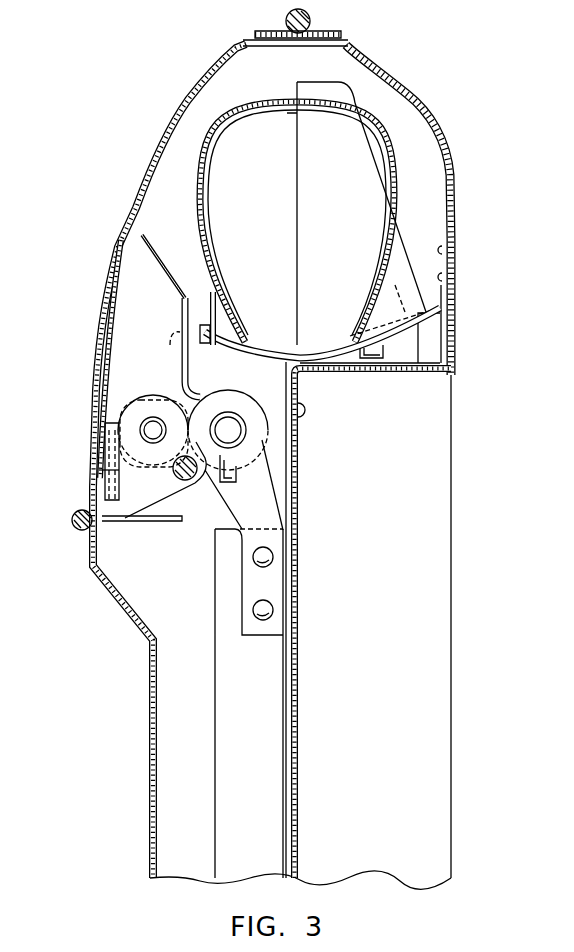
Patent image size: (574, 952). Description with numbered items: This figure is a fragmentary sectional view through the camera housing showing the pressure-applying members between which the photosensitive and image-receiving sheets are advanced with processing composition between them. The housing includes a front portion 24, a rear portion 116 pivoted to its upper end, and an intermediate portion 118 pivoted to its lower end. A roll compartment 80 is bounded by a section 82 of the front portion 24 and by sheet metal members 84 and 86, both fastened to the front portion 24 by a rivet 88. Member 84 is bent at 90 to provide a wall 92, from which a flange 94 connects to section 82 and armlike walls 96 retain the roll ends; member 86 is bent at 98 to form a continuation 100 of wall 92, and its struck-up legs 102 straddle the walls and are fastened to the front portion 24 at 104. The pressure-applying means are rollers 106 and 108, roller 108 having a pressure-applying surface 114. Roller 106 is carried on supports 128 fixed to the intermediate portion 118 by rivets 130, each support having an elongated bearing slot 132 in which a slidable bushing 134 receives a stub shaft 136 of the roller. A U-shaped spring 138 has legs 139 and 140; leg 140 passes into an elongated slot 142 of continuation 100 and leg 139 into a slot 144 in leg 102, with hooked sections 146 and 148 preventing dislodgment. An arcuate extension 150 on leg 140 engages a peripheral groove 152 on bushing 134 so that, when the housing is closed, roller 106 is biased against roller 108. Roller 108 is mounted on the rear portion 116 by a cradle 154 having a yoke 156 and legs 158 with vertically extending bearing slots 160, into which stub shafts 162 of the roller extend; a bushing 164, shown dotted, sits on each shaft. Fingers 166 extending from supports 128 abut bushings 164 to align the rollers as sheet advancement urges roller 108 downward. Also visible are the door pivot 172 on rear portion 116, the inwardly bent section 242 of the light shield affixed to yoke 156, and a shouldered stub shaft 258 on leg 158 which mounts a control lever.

The front portion 24 is at (452, 191).
The compartment 80 is at (267, 183).
The section 82 is at (455, 244).
The sheet metal member 84 is at (350, 365).
The sheet metal member 86 is at (283, 346).
The rivet 88 is at (305, 410).
The bend 90 is at (312, 372).
The wall 92 is at (396, 325).
The flange 94 is at (455, 274).
The armlike wall 96 is at (337, 149).
The bend 98 is at (288, 368).
The continuation 100 is at (228, 298).
The leg 102 is at (434, 372).
The fastening point 104 is at (450, 336).
The roller 106 is at (268, 472).
The roller 108 is at (144, 416).
The pressure-applying surface 114 is at (118, 418).
The rear portion 116 is at (104, 318).
The intermediate portion 118 is at (243, 655).
The support 128 is at (290, 462).
The rivet 130 is at (271, 560).
The bearing slot 132 is at (220, 498).
The bushing 134 is at (228, 482).
The stub shaft 136 is at (178, 300).
The spring 138 is at (262, 98).
The leg 139 is at (368, 240).
The leg 140 is at (214, 228).
The slot 142 is at (240, 330).
The slot 144 is at (350, 330).
The hooked section 146 is at (355, 296).
The hooked section 148 is at (202, 296).
The arcuate extension 150 is at (262, 434).
The peripheral groove 152 is at (170, 345).
The cradle 154 is at (100, 572).
The yoke 156 is at (95, 476).
The leg 158 is at (190, 490).
The bearing slot 160 is at (150, 416).
The stub shaft 162 is at (130, 420).
The bushing 164 is at (120, 437).
The finger 166 is at (112, 488).
The pivot 172 is at (76, 528).
The inwardly bent section 242 is at (148, 522).
The shouldered stub shaft 258 is at (175, 483).